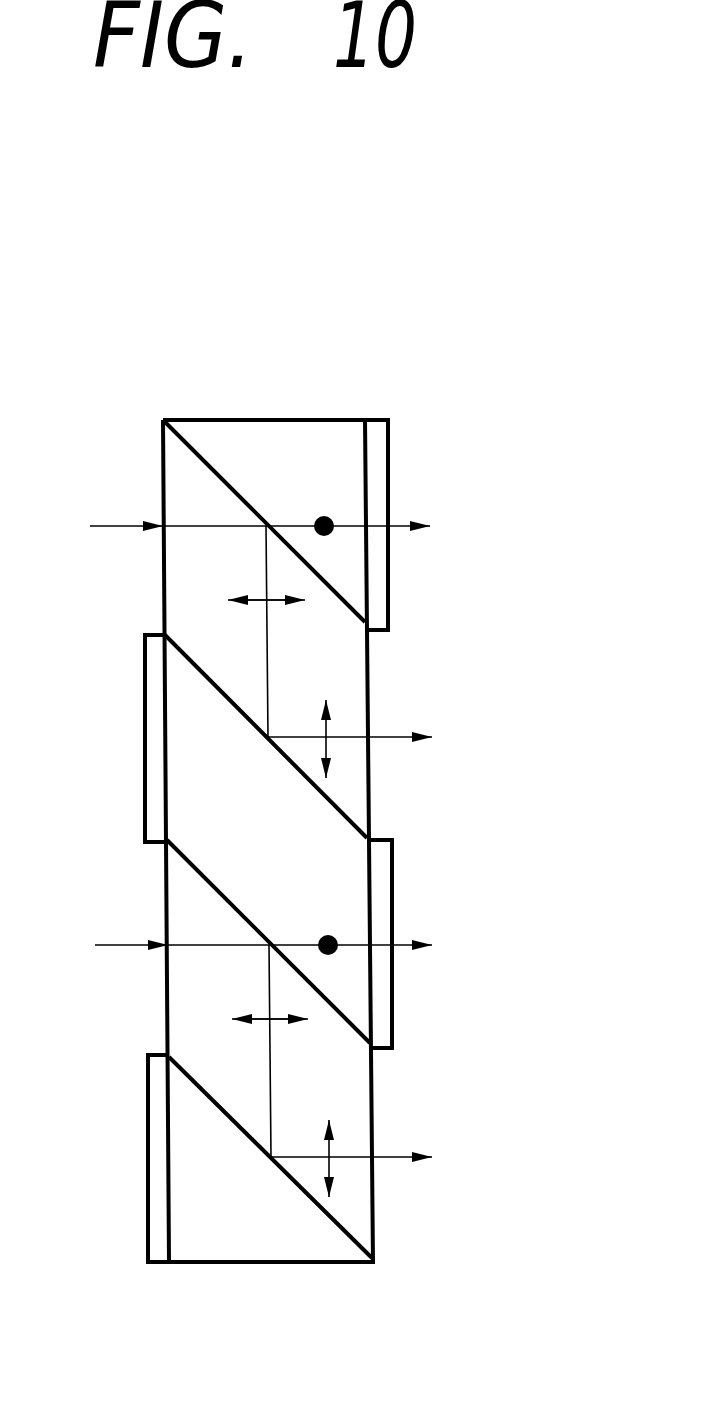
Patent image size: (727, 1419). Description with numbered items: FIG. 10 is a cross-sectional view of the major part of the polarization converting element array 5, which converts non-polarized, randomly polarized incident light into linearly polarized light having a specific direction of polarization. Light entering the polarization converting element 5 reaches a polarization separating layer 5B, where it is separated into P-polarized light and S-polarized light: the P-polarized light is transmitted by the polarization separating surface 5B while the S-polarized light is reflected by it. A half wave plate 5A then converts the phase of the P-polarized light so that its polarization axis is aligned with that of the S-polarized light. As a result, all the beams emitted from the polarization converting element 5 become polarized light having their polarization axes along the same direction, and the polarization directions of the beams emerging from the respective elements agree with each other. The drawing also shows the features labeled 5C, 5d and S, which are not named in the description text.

The polarization converting element array 5 is at (298, 280).
The half wave plate 5A is at (377, 475).
The polarization separating layer 5B is at (241, 497).
The half-wave plate (left side) 5C is at (144, 738).
The prism block 5d is at (175, 485).
The light beam displacement S is at (278, 603).